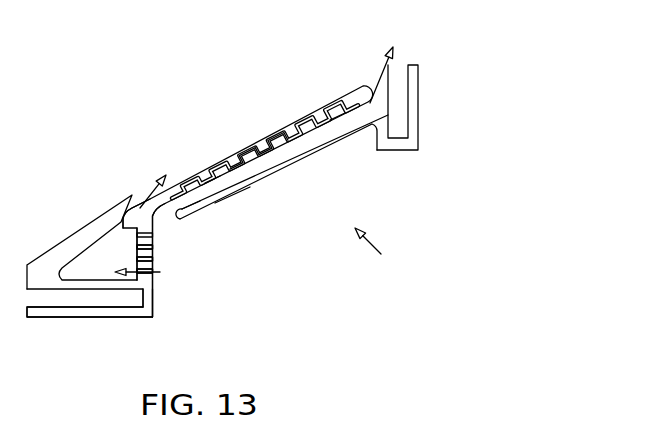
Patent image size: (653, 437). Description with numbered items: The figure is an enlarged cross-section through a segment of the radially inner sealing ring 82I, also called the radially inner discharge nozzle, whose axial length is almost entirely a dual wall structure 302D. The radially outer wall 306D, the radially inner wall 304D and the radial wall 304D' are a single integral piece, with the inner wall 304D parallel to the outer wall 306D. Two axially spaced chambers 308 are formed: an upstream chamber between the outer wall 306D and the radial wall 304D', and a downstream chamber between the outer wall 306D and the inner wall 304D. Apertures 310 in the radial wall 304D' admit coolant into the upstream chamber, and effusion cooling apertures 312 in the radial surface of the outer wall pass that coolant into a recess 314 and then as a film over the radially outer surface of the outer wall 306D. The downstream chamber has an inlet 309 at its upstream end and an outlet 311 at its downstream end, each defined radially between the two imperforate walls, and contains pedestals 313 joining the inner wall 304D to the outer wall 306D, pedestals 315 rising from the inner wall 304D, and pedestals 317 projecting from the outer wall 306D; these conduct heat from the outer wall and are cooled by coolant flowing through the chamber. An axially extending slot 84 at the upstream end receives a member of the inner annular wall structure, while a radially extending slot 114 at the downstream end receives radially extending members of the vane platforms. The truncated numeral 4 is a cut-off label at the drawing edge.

The radially outer wall 306D is at (112, 207).
The dual wall structure 302D is at (332, 264).
The effusion cooling apertures 312 is at (123, 246).
The apertures 310 is at (154, 257).
The radial wall 304D' is at (202, 294).
The slot 84 is at (95, 302).
The recess 314 is at (144, 318).
The chamber 308 is at (282, 126).
The pedestals 317 is at (264, 136).
The radially inner wall 304D is at (282, 169).
The pedestals 315 is at (234, 194).
The inlet 309 is at (200, 212).
The pedestals 313 is at (344, 124).
The slot 114 is at (413, 151).
The outlet 311 is at (405, 63).
The radially inner sealing ring 82I is at (393, 251).
The partial numeral 4 is at (10, 149).